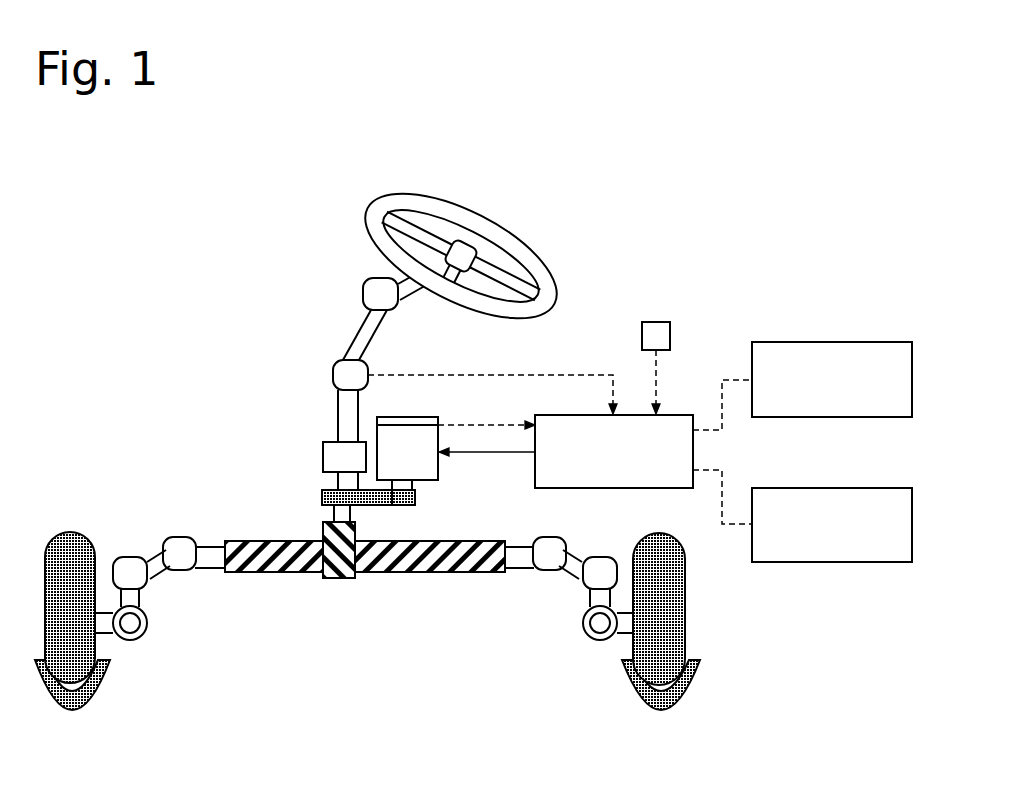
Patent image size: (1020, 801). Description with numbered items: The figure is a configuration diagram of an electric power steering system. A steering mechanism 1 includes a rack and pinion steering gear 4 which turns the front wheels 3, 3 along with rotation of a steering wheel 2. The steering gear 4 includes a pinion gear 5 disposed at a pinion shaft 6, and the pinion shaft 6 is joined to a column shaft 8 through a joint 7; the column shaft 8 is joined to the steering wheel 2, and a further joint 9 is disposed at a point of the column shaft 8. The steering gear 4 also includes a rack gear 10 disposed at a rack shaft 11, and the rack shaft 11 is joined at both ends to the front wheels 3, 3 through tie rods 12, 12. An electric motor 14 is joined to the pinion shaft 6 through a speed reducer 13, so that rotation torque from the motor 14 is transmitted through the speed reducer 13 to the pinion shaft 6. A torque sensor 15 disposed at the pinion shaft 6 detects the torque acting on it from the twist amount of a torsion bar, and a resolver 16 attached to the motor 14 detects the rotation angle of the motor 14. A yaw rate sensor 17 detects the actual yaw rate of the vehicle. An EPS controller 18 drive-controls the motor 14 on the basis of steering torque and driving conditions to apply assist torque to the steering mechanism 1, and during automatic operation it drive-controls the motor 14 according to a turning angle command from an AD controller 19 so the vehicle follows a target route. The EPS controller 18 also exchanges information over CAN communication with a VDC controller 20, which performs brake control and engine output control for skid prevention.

The steering mechanism 1 is at (315, 514).
The steering wheel 2 is at (506, 233).
The front wheels 3 is at (75, 532).
The rack and pinion steering gear 4 is at (337, 583).
The pinion gear 5 is at (323, 538).
The pinion shaft 6 is at (330, 510).
The joint 7 is at (333, 375).
The column shaft 8 is at (355, 338).
The joint 9 is at (365, 295).
The rack gear 10 is at (410, 573).
The rack shaft 11 is at (518, 570).
The tie rods 12 is at (155, 550).
The speed reducer 13 is at (420, 500).
The electric motor 14 is at (443, 465).
The torque sensor 15 is at (323, 456).
The resolver 16 is at (400, 417).
The yaw rate sensor 17 is at (660, 318).
The EPS controller 18 is at (673, 412).
The AD controller 19 is at (838, 340).
The VDC controller 20 is at (850, 565).